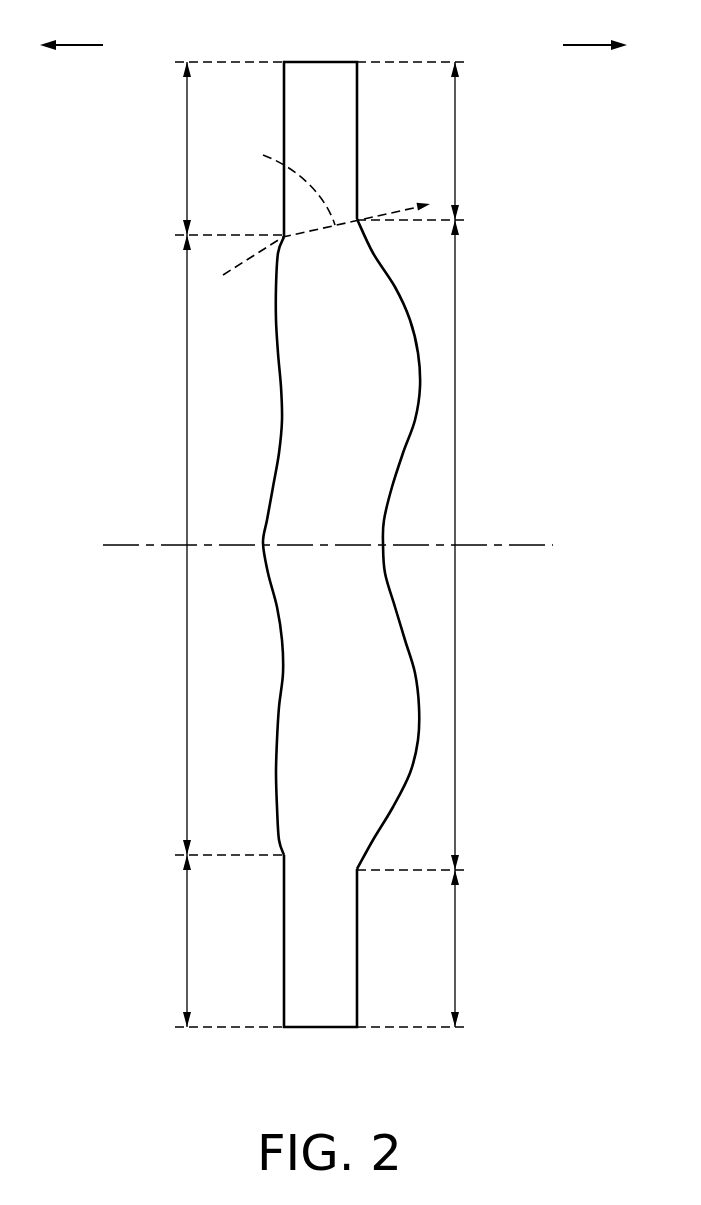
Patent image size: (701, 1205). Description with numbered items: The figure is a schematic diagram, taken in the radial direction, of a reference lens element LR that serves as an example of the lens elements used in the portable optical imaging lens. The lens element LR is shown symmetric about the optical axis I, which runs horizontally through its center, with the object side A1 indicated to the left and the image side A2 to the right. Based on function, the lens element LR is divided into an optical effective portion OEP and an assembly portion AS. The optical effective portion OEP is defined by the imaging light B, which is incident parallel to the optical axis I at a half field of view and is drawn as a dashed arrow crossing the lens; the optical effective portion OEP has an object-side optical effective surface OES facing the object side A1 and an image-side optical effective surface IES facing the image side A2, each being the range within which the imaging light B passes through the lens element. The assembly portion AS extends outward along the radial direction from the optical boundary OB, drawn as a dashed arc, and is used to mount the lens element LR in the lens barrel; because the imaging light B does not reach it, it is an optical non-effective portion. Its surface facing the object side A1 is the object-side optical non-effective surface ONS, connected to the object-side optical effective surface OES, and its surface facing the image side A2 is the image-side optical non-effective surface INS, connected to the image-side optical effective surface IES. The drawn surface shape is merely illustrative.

The object side A1 is at (71, 25).
The image side A2 is at (595, 25).
The assembly portion AS is at (324, 82).
The object-side optical non-effective surface ONS is at (204, 544).
The image-side optical non-effective surface INS is at (437, 544).
The object-side optical effective surface OES is at (205, 545).
The image-side optical effective surface IES is at (484, 545).
The optical effective portion OEP is at (355, 373).
The optical boundary OB is at (279, 180).
The imaging light B is at (402, 210).
The optical axis I is at (518, 545).
The reference lens element LR is at (616, 1095).